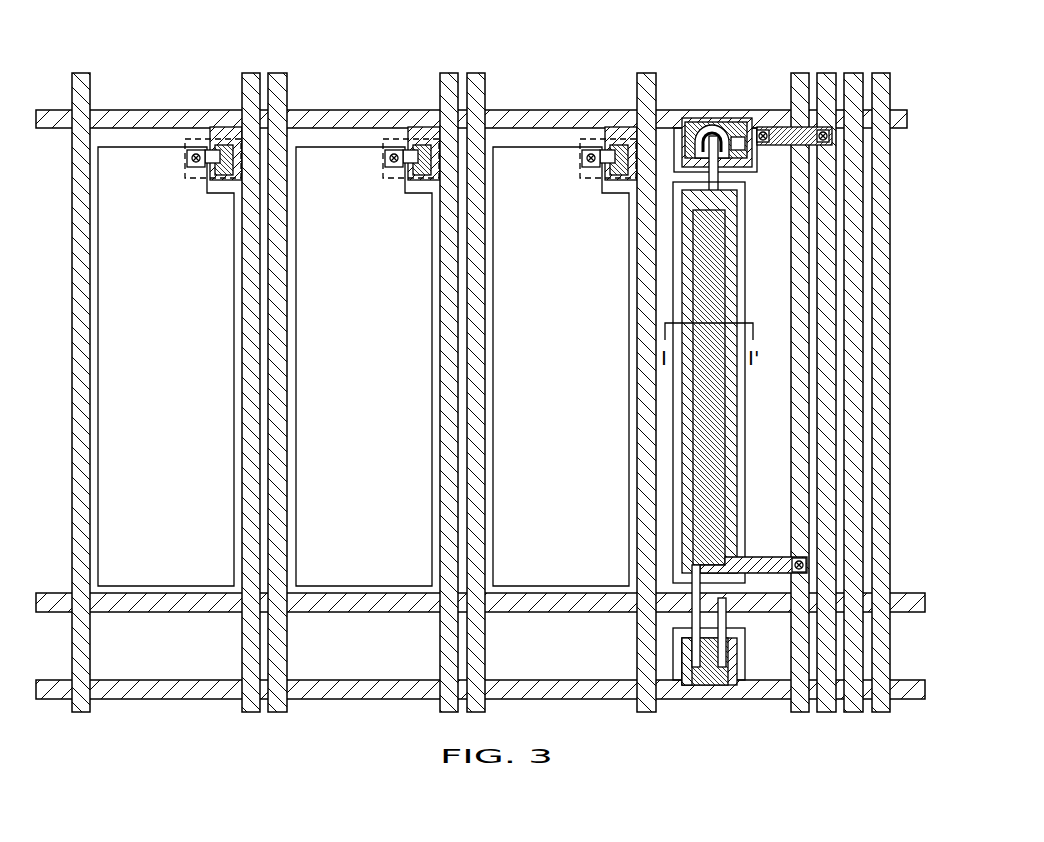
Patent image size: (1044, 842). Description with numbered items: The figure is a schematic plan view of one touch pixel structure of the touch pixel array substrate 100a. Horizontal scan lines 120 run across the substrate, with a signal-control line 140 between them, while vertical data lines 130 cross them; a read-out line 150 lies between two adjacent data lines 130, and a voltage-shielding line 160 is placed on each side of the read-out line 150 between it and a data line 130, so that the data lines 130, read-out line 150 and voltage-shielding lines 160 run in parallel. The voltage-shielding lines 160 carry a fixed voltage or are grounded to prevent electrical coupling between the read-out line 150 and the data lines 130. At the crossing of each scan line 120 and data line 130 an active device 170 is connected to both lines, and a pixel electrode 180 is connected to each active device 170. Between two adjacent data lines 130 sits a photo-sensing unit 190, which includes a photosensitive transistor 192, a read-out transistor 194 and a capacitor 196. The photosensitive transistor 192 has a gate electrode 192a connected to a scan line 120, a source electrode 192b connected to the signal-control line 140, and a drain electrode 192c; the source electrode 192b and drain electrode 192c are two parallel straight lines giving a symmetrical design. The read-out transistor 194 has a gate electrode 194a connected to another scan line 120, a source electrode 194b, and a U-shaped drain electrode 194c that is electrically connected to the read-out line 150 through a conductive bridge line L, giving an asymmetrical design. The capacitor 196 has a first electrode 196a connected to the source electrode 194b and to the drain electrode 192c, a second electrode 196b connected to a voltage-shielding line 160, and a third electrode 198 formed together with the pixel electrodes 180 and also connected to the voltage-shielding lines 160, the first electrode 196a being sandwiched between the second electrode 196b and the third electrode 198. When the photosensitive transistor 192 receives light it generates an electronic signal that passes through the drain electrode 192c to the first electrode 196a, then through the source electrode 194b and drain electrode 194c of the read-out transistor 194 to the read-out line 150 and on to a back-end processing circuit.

The touch pixel array substrate 100a is at (973, 742).
The scan line 120 is at (905, 119).
The data line 130 is at (477, 73).
The signal-control line 140 is at (925, 603).
The read-out line 150 is at (827, 73).
The voltage-shielding line 160 is at (800, 73).
The active device 170 is at (603, 137).
The pixel electrode 180 is at (541, 145).
The photo-sensing unit 190 is at (846, 398).
The photosensitive transistor 192 is at (821, 506).
The gate electrode 192a is at (710, 688).
The source electrode 192b is at (732, 688).
The drain electrode 192c is at (679, 687).
The read-out transistor 194 is at (825, 163).
The gate electrode 194a is at (681, 148).
The source electrode 194b is at (714, 122).
The drain electrode 194c is at (755, 107).
The capacitor 196 is at (851, 382).
The first electrode 196a is at (717, 438).
The second electrode 196b is at (730, 475).
The third electrode 198 is at (742, 406).
The conductive bridge line L is at (832, 147).